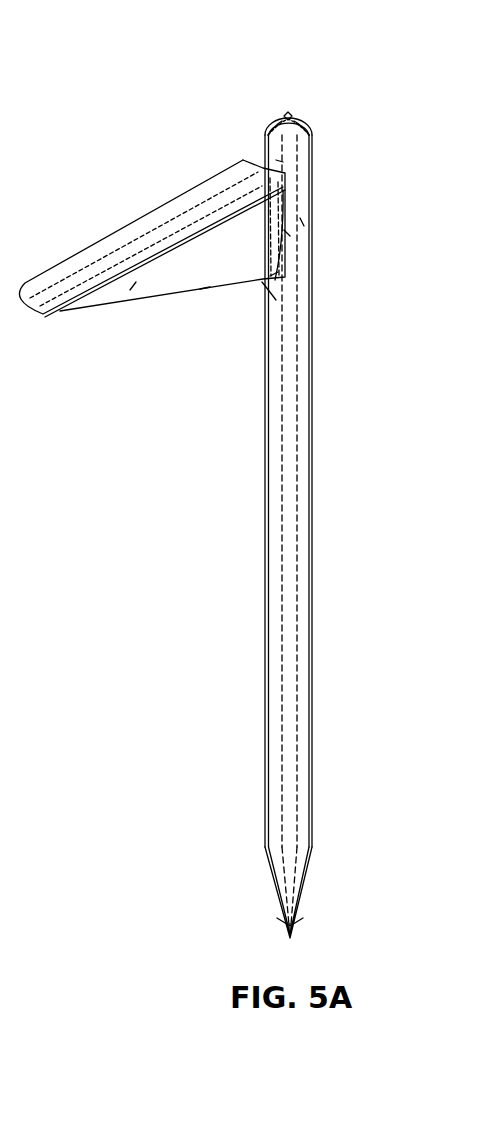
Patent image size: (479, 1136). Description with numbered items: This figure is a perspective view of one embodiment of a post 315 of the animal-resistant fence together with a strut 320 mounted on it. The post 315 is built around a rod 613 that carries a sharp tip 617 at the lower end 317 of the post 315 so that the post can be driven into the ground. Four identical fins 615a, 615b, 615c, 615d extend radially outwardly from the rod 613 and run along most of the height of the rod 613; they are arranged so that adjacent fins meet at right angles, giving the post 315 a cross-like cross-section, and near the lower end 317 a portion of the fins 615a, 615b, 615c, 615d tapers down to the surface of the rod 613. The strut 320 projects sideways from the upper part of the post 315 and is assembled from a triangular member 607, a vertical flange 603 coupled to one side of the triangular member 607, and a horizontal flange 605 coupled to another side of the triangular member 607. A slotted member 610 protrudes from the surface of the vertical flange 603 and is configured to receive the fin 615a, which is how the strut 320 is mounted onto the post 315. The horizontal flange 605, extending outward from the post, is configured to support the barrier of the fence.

The post 315 is at (262, 538).
The lower end 317 is at (253, 890).
The strut 320 is at (208, 288).
The vertical flange 603 is at (288, 234).
The horizontal flange 605 is at (112, 255).
The triangular member 607 is at (138, 285).
The slotted member 610 is at (276, 274).
The rod 613 is at (288, 114).
The fin 615a is at (282, 162).
The fin 615b is at (275, 118).
The fin 615c is at (298, 117).
The fin 615d is at (302, 222).
The sharp tip 617 is at (300, 927).